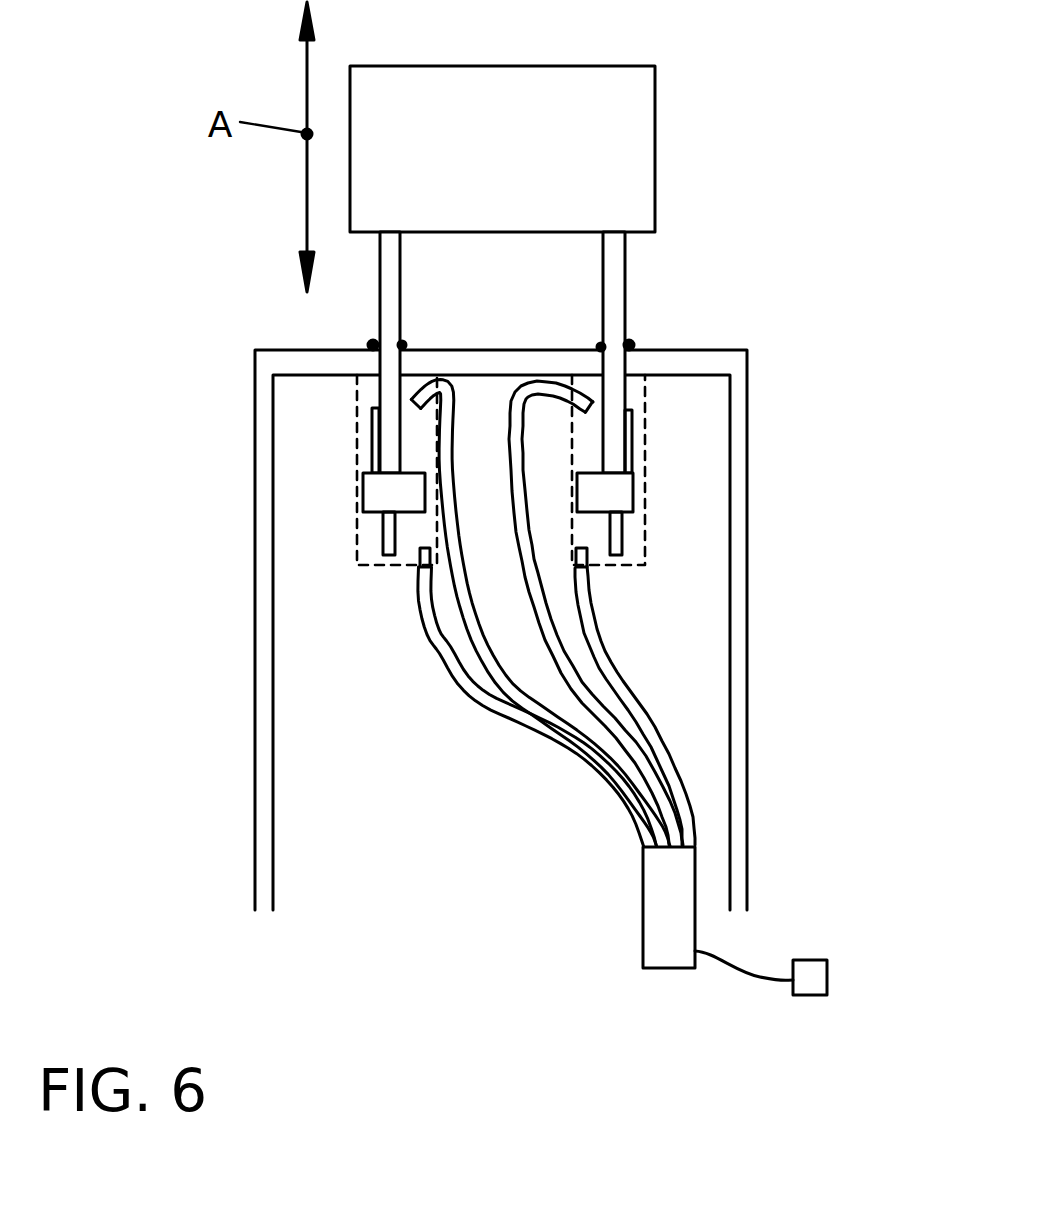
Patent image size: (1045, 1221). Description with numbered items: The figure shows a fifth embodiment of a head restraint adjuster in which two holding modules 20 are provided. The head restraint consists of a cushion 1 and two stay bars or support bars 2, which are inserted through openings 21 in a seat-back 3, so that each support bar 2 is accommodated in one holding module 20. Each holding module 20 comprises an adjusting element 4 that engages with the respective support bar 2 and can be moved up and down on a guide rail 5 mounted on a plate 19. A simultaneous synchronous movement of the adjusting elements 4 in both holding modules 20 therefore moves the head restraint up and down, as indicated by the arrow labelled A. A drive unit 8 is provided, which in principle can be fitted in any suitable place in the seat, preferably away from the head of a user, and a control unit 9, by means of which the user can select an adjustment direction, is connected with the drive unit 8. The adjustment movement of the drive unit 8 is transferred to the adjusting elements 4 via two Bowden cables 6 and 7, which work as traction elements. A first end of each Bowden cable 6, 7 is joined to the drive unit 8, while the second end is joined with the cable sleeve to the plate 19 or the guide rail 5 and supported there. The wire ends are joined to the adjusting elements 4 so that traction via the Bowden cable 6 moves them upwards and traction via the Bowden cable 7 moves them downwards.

The cushion 1 is at (637, 158).
The support bar 2 is at (388, 298).
The seat-back 3 is at (738, 480).
The adjusting element 4 is at (577, 498).
The guide rail 5 is at (385, 539).
The Bowden cable 6 is at (582, 682).
The Bowden cable 7 is at (600, 770).
The drive unit 8 is at (670, 905).
The control unit 9 is at (813, 973).
The plate 19 is at (357, 452).
The holding module 20 is at (358, 590).
The opening 21 is at (373, 345).